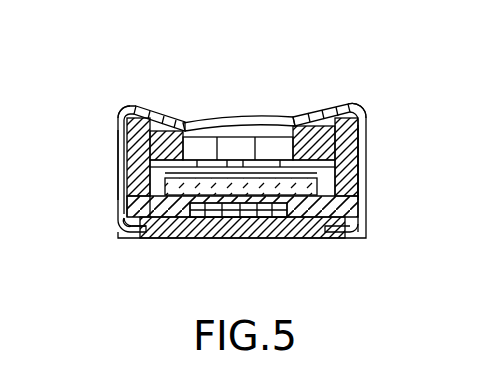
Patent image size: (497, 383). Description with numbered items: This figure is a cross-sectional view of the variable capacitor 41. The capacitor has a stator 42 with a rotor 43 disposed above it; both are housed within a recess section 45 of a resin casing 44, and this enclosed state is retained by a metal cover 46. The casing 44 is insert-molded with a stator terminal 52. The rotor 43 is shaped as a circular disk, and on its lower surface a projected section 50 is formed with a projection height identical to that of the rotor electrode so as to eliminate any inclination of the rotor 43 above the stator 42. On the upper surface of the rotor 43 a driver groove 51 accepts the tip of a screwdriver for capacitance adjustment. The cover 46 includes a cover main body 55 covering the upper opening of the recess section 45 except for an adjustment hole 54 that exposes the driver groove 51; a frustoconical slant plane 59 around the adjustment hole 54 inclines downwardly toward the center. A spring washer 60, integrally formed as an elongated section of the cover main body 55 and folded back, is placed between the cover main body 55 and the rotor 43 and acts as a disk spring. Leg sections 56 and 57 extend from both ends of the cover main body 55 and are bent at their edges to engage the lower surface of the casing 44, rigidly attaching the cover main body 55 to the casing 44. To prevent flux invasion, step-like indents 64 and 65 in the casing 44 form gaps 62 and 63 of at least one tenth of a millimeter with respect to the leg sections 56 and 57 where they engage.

The variable capacitor 41 is at (101, 88).
The stator 42 is at (131, 206).
The rotor 43 is at (364, 170).
The casing 44 is at (287, 244).
The recess section 45 is at (364, 206).
The cover 46 is at (364, 105).
The projected section 50 is at (233, 212).
The driver groove 51 is at (236, 148).
The stator terminal 52 is at (201, 230).
The adjustment hole 54 is at (198, 122).
The cover main body 55 is at (315, 117).
The leg section 56 is at (349, 236).
The leg section 57 is at (145, 236).
The frustoconical slant plane 59 is at (290, 120).
The spring washer 60 is at (178, 118).
The gap 62 is at (372, 114).
The gap 63 is at (118, 112).
The step-like indent 64 is at (367, 143).
The step-like indent 65 is at (120, 142).